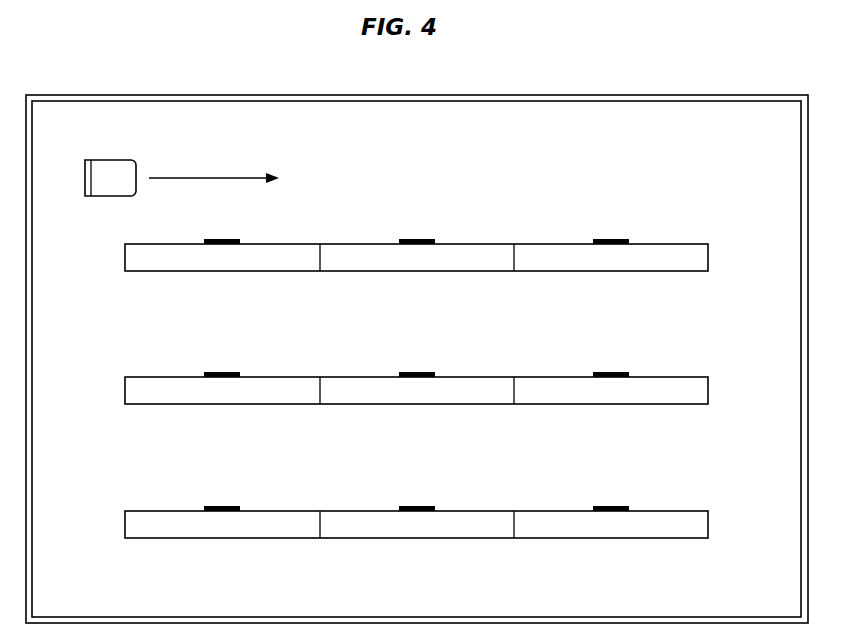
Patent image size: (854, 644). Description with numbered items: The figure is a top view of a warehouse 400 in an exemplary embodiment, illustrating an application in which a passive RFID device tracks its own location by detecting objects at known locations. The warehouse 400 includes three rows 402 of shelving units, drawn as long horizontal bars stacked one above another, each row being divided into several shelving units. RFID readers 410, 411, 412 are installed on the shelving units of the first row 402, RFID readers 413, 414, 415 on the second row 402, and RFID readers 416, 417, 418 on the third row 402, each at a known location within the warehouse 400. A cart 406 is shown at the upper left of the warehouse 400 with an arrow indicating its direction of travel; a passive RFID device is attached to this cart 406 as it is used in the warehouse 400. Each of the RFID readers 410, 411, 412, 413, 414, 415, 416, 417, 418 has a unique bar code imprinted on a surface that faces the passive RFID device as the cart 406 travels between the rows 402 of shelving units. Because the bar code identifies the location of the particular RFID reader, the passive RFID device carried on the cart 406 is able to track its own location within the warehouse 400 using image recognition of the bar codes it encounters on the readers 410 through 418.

The warehouse 400 is at (596, 66).
The rows of shelving units 402 is at (125, 258).
The cart 406 is at (106, 160).
The RFID reader 410 is at (222, 239).
The RFID reader 411 is at (416, 239).
The RFID reader 412 is at (611, 239).
The RFID reader 413 is at (222, 372).
The RFID reader 414 is at (416, 372).
The RFID reader 415 is at (611, 372).
The RFID reader 416 is at (222, 506).
The RFID reader 417 is at (416, 506).
The RFID reader 418 is at (611, 506).